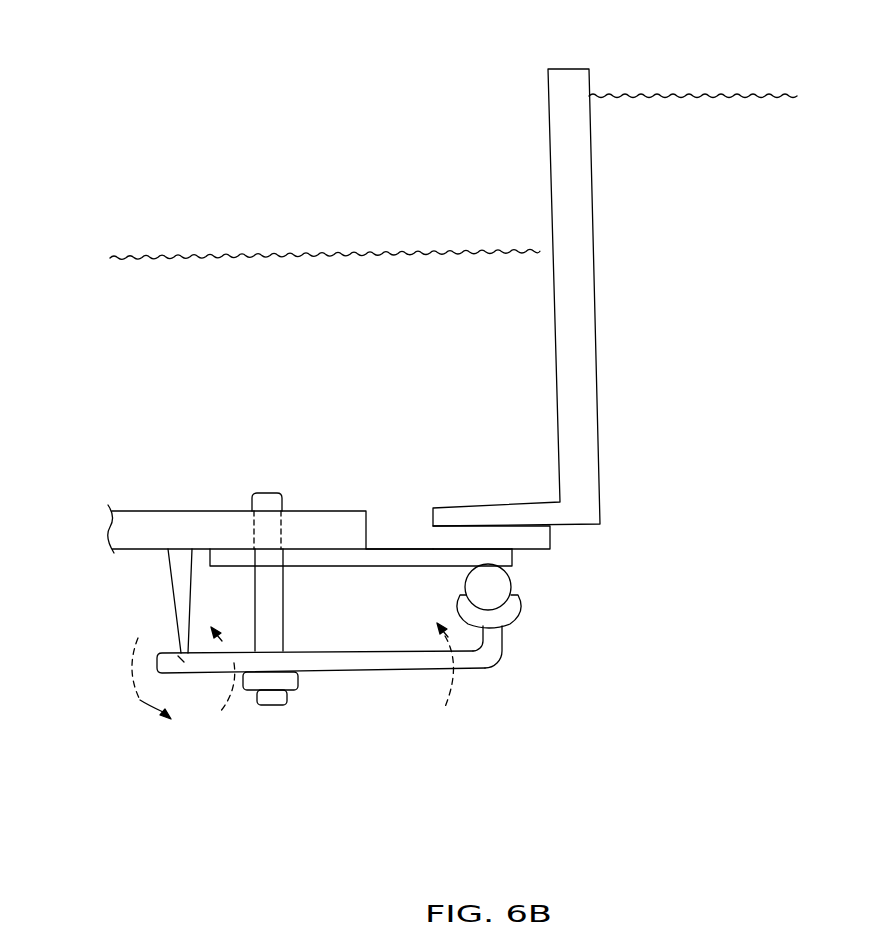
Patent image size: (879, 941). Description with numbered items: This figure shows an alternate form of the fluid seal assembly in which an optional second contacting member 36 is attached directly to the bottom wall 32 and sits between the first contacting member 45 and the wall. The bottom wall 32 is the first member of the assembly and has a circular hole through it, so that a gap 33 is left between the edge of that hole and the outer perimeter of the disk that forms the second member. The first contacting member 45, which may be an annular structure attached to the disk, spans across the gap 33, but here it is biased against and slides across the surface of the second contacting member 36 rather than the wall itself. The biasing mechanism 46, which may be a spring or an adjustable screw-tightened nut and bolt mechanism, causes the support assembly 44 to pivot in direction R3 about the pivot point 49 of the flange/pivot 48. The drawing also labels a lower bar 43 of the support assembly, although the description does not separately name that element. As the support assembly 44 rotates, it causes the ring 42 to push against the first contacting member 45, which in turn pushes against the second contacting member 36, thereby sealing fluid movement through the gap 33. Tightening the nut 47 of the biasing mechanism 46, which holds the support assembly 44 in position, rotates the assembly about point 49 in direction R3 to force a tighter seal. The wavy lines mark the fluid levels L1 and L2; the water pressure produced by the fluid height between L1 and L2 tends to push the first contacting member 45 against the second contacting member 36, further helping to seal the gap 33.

The fluid height level L1 is at (731, 96).
The fluid height level L2 is at (247, 256).
The bottom wall 32 is at (572, 512).
The gap 33 is at (398, 511).
The second contacting member 36 is at (528, 540).
The ring 42 is at (466, 583).
The lower bar 43 is at (372, 669).
The support assembly 44 is at (528, 665).
The first contacting member 45 is at (420, 549).
The biasing mechanism 46 is at (275, 615).
The nut 47 is at (299, 689).
The flange/pivot 48 is at (175, 605).
The pivot point 49 is at (178, 668).
The direction of rotation R3 is at (150, 703).